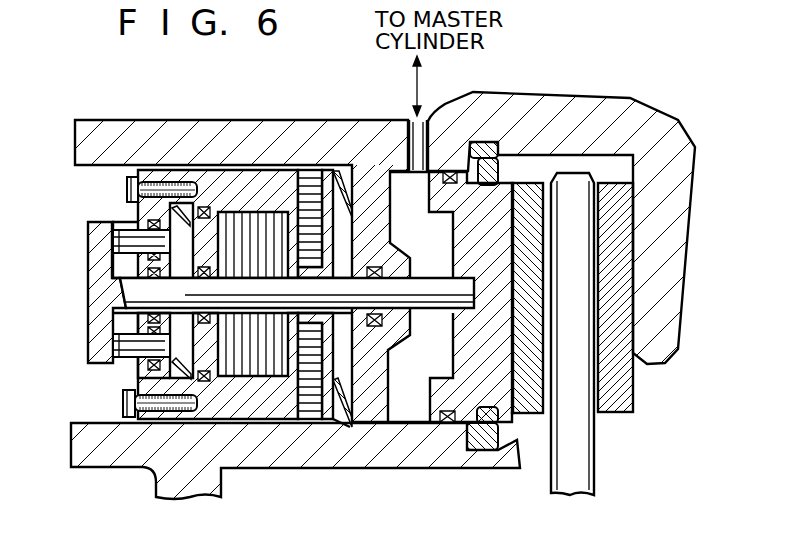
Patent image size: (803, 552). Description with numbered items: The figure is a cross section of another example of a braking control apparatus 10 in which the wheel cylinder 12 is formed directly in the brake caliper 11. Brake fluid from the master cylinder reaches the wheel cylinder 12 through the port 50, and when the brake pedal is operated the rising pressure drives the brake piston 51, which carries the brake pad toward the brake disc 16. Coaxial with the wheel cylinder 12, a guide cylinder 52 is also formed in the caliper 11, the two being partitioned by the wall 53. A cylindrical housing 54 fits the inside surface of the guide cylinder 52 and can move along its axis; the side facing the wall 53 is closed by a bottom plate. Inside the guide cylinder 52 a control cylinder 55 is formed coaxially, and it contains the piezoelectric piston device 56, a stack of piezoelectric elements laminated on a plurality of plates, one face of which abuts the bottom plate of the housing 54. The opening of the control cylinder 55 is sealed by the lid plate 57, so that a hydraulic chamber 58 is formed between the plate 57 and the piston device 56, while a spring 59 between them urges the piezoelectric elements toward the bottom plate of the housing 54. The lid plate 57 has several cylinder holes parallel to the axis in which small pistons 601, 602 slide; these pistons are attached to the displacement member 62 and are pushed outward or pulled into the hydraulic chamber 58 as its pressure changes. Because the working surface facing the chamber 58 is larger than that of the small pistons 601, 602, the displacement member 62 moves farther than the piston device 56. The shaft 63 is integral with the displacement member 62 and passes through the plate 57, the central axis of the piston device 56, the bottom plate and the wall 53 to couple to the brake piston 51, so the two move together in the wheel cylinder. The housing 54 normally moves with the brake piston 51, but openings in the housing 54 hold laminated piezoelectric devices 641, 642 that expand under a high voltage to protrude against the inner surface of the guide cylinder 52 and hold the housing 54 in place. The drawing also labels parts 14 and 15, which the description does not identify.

The braking control apparatus 10 is at (70, 113).
The brake caliper 11 is at (567, 108).
The wheel cylinder 12 is at (412, 408).
The piston sleeve 14 is at (537, 180).
The brake disc 15 is at (626, 236).
The brake disc 16 is at (585, 455).
The port 50 is at (412, 141).
The brake piston 51 is at (512, 430).
The guide cylinder 52 is at (110, 168).
The wall 53 is at (382, 376).
The housing 54 is at (277, 430).
The control cylinder 55 is at (227, 400).
The piezoelectric piston device 56 is at (245, 210).
The lid plate 57 is at (147, 213).
The hydraulic chamber 58 is at (137, 380).
The spring 59 is at (124, 400).
The small piston 601 is at (118, 242).
The small piston 602 is at (118, 345).
The displacement member 62 is at (97, 300).
The shaft 63 is at (432, 304).
The piezoelectric device 641 is at (312, 178).
The piezoelectric device 642 is at (310, 424).